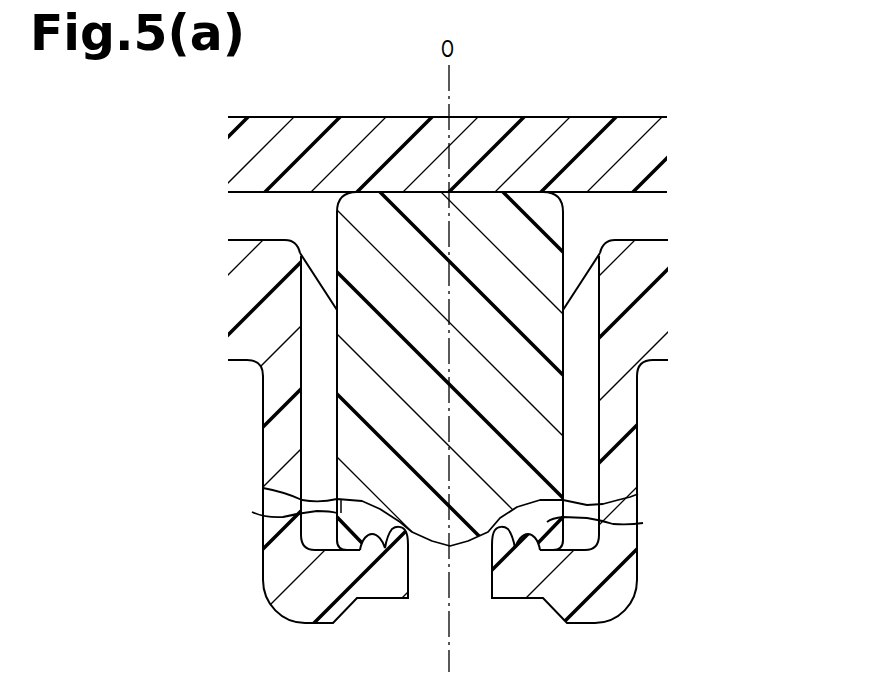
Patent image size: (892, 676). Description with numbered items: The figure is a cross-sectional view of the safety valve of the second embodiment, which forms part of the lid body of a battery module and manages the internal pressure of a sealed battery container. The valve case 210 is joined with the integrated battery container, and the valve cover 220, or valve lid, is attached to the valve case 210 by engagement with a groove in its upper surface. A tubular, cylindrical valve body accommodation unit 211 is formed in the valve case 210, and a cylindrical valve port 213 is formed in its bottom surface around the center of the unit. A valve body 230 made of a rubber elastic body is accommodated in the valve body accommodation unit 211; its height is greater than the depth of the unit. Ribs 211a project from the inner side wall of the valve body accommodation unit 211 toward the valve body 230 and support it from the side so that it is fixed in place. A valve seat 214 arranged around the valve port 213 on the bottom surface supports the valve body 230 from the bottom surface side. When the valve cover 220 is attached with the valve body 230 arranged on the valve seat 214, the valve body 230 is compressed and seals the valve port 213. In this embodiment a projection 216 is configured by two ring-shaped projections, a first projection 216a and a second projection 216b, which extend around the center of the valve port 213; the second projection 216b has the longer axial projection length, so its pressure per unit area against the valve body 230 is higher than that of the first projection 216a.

The valve cover 220 is at (594, 117).
The valve body 230 is at (557, 208).
The valve case 210 is at (655, 240).
The valve body accommodation unit 211 is at (588, 412).
The rib 211a is at (312, 263).
The projection 216 is at (451, 503).
The first projection 216a is at (252, 512).
The second projection 216b is at (263, 488).
The valve port 213 is at (497, 570).
The valve seat 214 is at (492, 580).